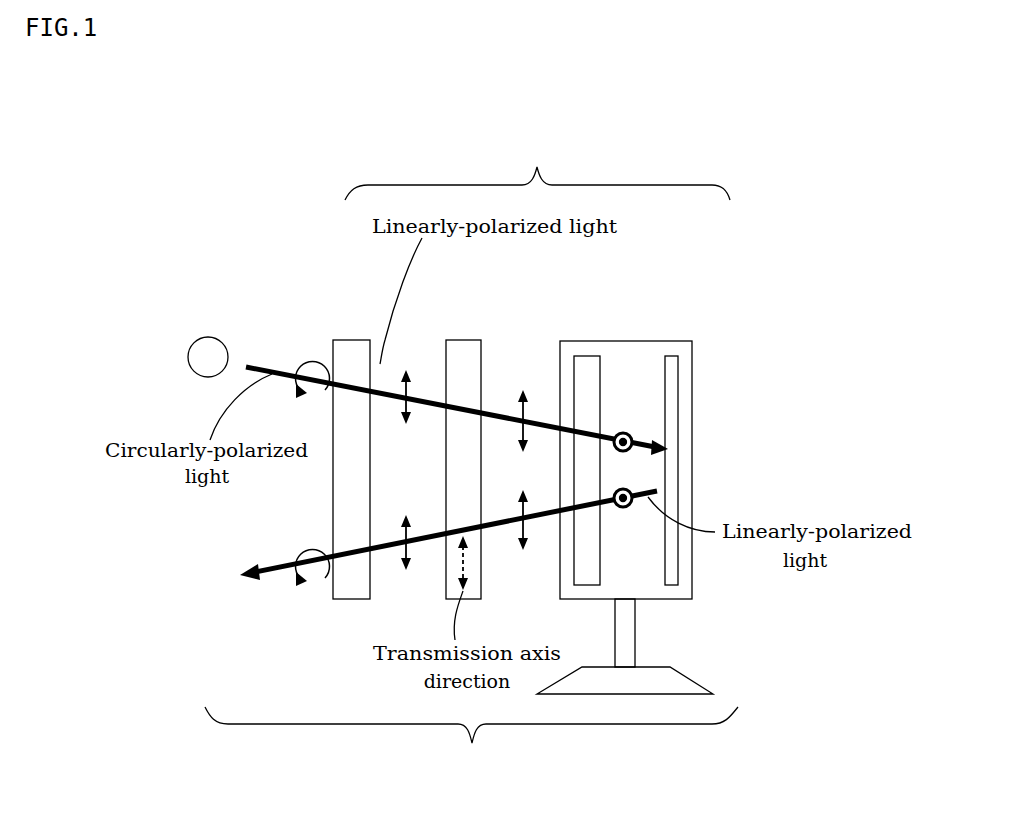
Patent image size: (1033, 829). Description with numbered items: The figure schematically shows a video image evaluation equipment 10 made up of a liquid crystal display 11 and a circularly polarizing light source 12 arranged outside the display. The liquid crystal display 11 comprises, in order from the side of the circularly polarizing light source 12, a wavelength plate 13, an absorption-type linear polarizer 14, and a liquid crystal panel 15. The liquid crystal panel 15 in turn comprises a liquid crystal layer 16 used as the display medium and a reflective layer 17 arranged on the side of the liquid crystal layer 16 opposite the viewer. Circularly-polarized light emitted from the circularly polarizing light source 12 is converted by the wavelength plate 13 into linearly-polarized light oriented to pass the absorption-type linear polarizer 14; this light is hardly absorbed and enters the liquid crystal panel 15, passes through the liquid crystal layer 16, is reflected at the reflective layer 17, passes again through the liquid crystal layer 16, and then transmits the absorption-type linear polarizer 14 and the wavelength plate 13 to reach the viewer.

The video image evaluation equipment 10 is at (471, 742).
The liquid crystal display 11 is at (537, 167).
The circularly polarizing light source 12 is at (204, 347).
The wavelength plate 13 is at (351, 355).
The absorption-type linear polarizer 14 is at (462, 355).
The liquid crystal panel 15 is at (627, 352).
The liquid crystal layer 16 is at (586, 368).
The reflective layer 17 is at (670, 366).